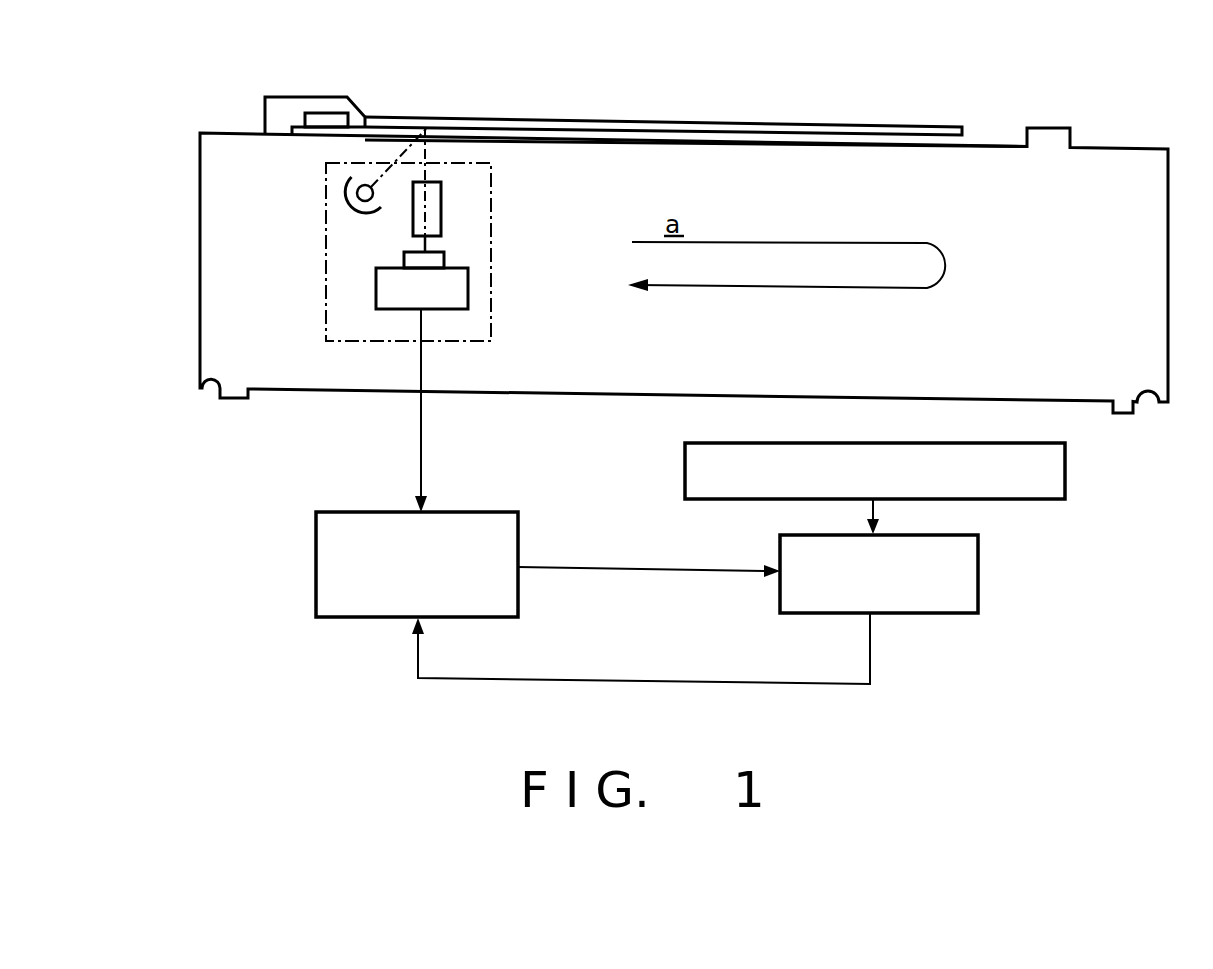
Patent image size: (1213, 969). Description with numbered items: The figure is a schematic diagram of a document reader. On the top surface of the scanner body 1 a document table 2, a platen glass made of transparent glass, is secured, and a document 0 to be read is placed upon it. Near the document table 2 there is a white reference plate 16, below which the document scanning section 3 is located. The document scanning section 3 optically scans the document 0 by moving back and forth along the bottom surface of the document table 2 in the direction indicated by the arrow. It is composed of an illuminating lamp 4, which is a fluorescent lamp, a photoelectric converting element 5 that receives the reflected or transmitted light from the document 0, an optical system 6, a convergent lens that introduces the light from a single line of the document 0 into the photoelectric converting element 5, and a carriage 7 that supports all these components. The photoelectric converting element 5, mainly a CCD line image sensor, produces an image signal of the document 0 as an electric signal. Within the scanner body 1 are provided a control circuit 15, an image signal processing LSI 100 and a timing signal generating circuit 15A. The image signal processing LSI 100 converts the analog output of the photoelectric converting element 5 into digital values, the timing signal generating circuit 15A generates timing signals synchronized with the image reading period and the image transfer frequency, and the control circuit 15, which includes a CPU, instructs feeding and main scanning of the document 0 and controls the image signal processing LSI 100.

The scanner body 1 is at (1145, 236).
The document 0 is at (815, 122).
The document table 2 is at (884, 140).
The document scanning section 3 is at (323, 303).
The illuminating lamp 4 is at (345, 200).
The photoelectric converting element 5 is at (445, 260).
The optical system 6 is at (443, 204).
The carriage 7 is at (357, 258).
The control circuit 15 is at (978, 581).
The timing signal generating circuit 15A is at (1065, 478).
The white reference plate 16 is at (327, 113).
The image signal processing LSI 100 is at (316, 562).